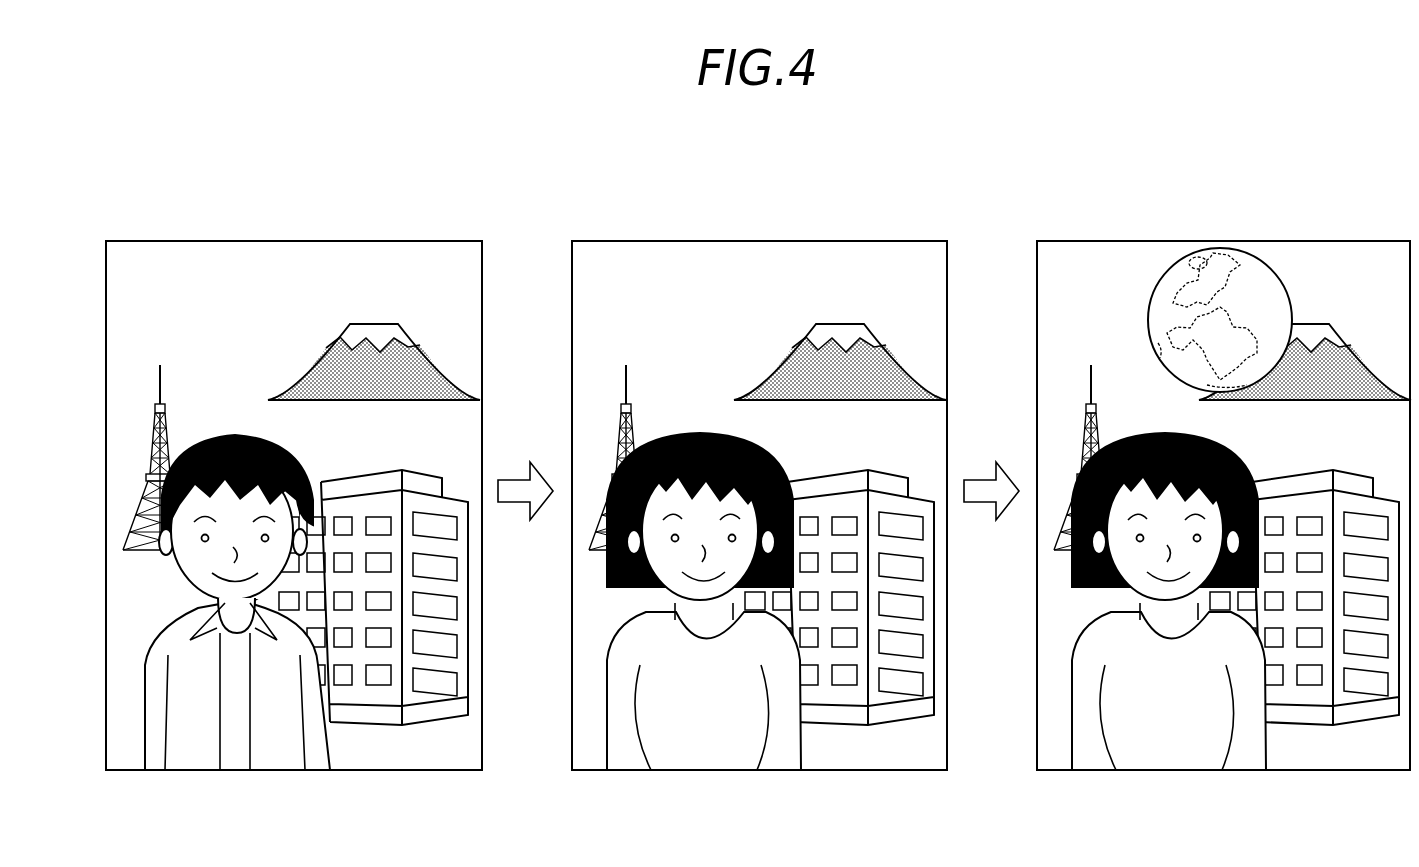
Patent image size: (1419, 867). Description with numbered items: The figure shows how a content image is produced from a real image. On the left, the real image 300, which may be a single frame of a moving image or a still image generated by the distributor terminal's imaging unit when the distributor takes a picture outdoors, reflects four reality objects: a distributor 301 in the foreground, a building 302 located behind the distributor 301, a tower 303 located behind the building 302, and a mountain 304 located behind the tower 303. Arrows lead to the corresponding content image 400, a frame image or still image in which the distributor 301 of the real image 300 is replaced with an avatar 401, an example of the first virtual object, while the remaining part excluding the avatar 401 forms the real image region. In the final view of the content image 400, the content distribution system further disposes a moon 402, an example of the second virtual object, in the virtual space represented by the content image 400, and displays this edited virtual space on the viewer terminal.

The real image 300 is at (299, 241).
The distributor 301 is at (165, 622).
The building 302 is at (413, 472).
The tower 303 is at (162, 390).
The mountain 304 is at (378, 323).
The content image 400 is at (765, 241).
The avatar 401 is at (607, 650).
The moon 402 is at (1285, 283).